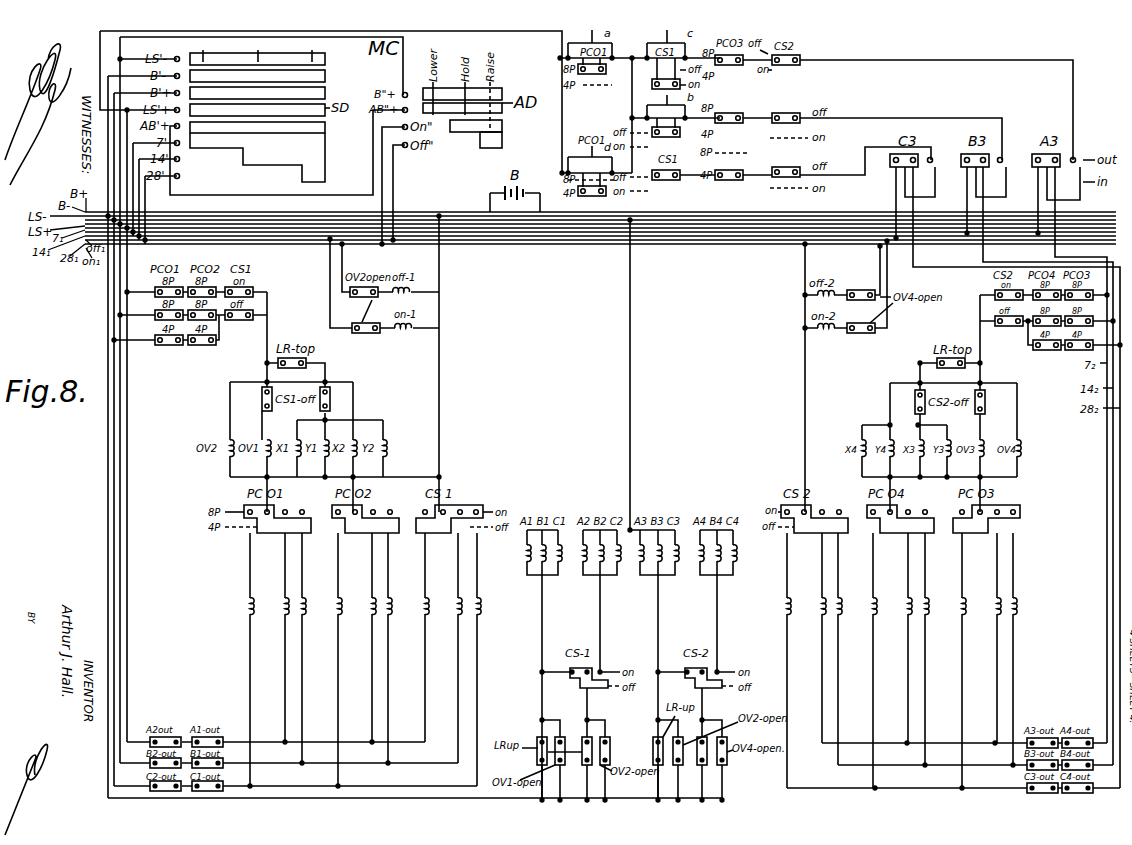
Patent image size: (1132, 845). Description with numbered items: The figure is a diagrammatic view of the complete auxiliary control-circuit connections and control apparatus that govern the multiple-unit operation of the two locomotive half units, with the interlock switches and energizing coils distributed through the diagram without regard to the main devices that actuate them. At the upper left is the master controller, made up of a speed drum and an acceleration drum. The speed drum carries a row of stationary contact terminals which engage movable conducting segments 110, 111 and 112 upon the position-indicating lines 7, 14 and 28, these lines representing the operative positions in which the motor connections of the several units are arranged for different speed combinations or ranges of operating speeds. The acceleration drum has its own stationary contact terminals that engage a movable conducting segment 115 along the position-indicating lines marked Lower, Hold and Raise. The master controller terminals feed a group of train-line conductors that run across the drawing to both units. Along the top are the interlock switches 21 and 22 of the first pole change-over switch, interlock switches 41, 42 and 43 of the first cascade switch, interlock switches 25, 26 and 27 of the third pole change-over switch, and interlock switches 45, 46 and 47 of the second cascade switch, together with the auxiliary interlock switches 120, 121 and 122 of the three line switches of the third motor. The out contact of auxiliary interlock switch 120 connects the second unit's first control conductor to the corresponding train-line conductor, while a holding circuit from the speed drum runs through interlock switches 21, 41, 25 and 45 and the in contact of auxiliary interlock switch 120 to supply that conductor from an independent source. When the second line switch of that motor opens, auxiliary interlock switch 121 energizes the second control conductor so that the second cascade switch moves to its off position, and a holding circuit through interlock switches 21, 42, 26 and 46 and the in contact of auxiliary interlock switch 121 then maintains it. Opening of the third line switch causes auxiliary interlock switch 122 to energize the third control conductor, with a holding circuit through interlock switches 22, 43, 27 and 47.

The position-indicating line 7 is at (203, 49).
The position-indicating line 14 is at (256, 49).
The position-indicating line 28 is at (308, 49).
The movable conducting segment 110 is at (325, 74).
The movable conducting segment 111 is at (325, 93).
The movable conducting segment 112 is at (313, 126).
The movable conducting segment 115 is at (488, 143).
The interlock switch 21 is at (590, 76).
The interlock switch 22 is at (590, 197).
The interlock switch 25 is at (724, 65).
The interlock switch 26 is at (724, 123).
The interlock switch 27 is at (727, 178).
The interlock switch 41 is at (654, 80).
The interlock switch 42 is at (665, 138).
The interlock switch 43 is at (663, 180).
The interlock switch 45 is at (786, 65).
The interlock switch 46 is at (788, 123).
The interlock switch 47 is at (785, 167).
The auxiliary interlock switch 120 is at (1056, 177).
The auxiliary interlock switch 121 is at (998, 190).
The auxiliary interlock switch 122 is at (927, 190).